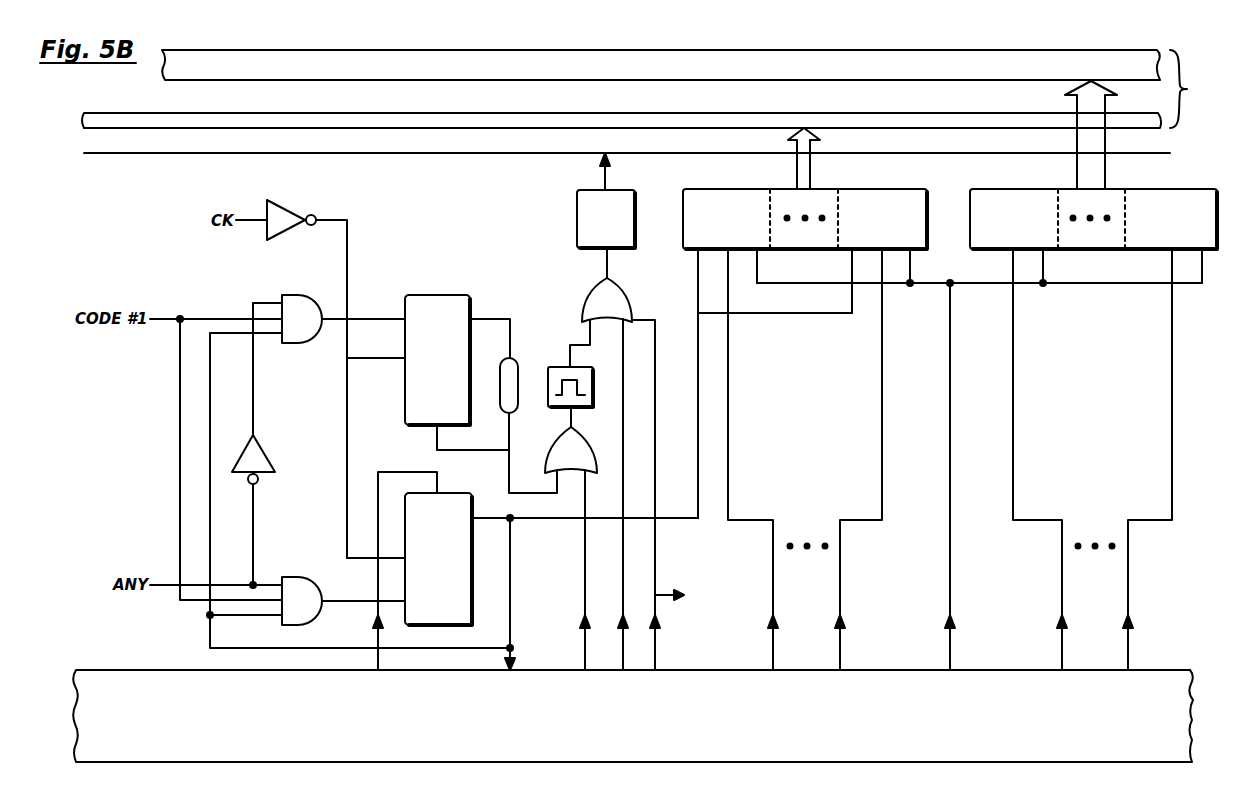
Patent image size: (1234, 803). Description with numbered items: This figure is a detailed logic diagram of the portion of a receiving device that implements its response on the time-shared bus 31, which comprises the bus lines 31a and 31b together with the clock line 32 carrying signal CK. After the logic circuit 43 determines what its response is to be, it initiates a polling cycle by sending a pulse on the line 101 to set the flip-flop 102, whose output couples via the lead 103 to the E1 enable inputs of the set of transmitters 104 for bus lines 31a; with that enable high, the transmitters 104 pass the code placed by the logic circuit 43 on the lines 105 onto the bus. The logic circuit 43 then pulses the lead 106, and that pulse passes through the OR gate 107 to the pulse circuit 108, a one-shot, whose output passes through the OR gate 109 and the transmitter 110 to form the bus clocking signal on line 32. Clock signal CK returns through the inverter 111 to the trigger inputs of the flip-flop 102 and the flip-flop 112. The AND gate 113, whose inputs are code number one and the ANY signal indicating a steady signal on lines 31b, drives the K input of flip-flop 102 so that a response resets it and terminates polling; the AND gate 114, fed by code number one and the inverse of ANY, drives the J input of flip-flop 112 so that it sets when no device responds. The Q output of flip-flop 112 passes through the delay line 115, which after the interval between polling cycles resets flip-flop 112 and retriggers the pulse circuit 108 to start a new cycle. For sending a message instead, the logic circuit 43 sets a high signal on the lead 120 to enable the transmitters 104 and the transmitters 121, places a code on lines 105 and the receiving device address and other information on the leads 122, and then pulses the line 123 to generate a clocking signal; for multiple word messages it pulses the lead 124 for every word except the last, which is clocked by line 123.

The time-shared bus 31 is at (1190, 89).
The bus lines 31a is at (943, 113).
The bus lines 31b is at (958, 50).
The clock line 32 is at (935, 153).
The logic circuit 43 is at (707, 762).
The line 101 is at (370, 633).
The flip-flop 102 is at (455, 493).
The lead 103 is at (550, 518).
The transmitters 104 is at (683, 212).
The lines 105 is at (742, 520).
The lead 106 is at (585, 585).
The OR gate 107 is at (592, 452).
The pulse circuit 108 is at (548, 405).
The OR gate 109 is at (630, 302).
The transmitter 110 is at (577, 214).
The inverter 111 is at (290, 206).
The flip-flop 112 is at (428, 295).
The AND gate 113 is at (288, 577).
The AND gate 114 is at (286, 295).
The delay line 115 is at (518, 365).
The lead 120 is at (950, 590).
The transmitters 121 is at (970, 207).
The leads 122 is at (1027, 520).
The line 123 is at (655, 565).
The lead 124 is at (623, 585).